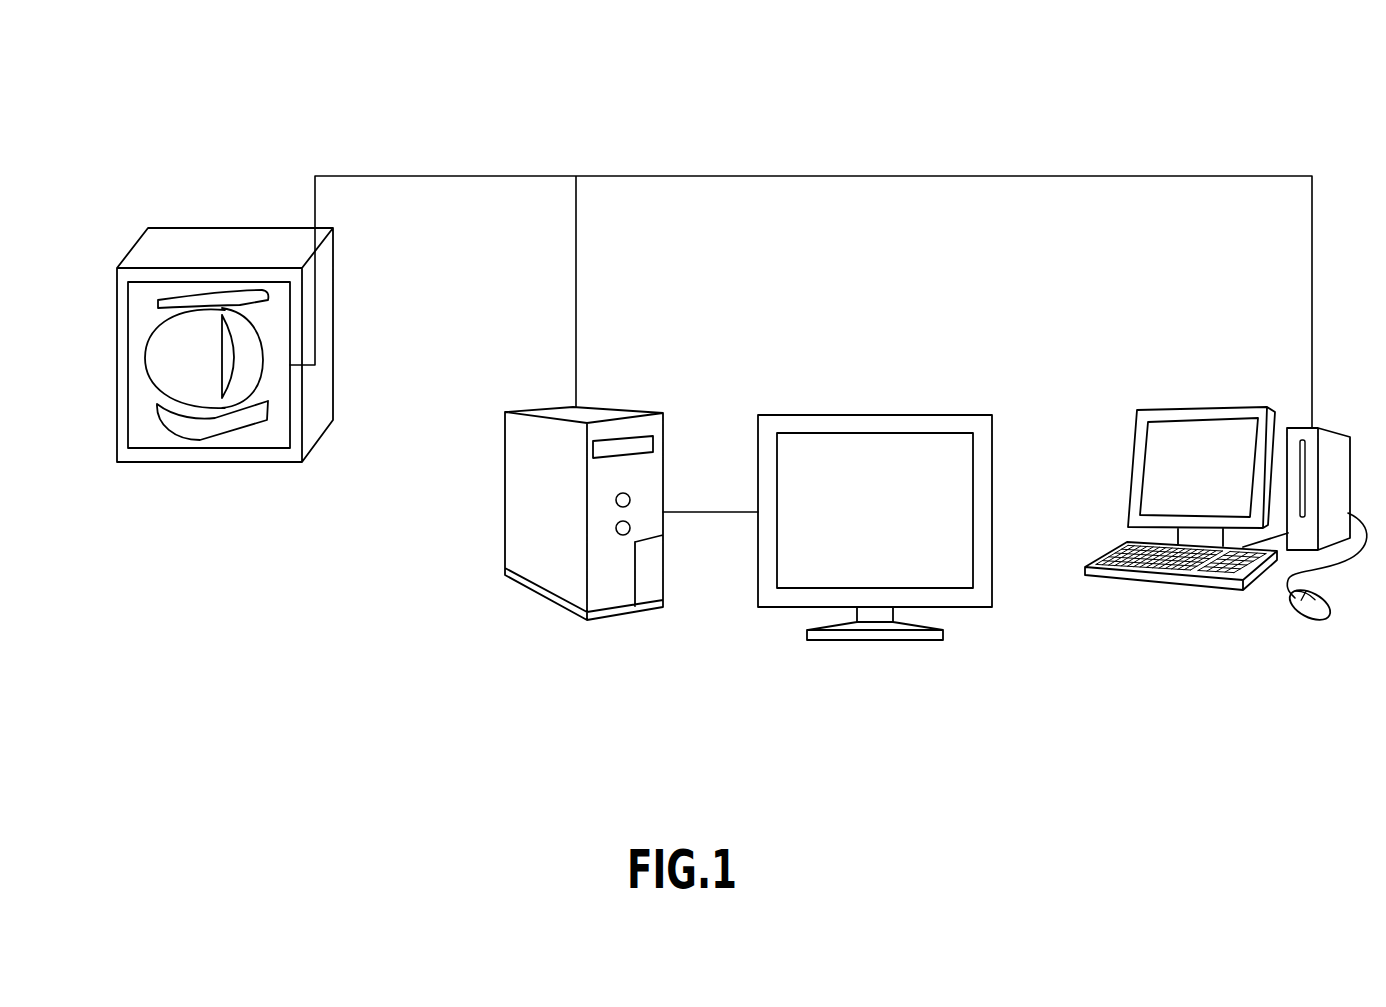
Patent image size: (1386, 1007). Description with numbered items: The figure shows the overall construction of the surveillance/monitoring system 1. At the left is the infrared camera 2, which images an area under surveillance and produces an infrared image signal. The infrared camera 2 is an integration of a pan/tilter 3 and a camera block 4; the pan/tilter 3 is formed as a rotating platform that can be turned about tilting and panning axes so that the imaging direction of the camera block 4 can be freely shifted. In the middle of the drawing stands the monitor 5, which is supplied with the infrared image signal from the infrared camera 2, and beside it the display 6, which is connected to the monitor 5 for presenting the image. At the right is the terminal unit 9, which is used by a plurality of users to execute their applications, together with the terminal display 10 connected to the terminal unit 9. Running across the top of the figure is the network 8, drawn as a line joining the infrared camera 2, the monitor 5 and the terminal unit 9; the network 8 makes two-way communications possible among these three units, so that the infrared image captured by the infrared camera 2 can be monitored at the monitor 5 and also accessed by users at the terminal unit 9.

The surveillance/monitoring system 1 is at (935, 92).
The infrared camera 2 is at (148, 298).
The pan/tilter 3 is at (163, 429).
The camera block 4 is at (158, 360).
The monitor 5 is at (626, 410).
The display 6 is at (868, 415).
The network 8 is at (1137, 176).
The terminal unit 9 is at (1340, 428).
The terminal display 10 is at (1172, 583).